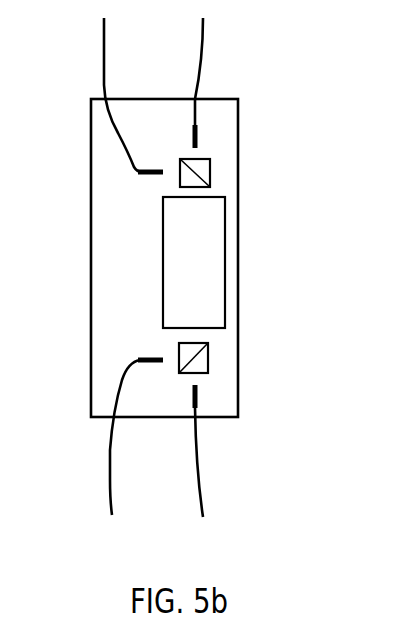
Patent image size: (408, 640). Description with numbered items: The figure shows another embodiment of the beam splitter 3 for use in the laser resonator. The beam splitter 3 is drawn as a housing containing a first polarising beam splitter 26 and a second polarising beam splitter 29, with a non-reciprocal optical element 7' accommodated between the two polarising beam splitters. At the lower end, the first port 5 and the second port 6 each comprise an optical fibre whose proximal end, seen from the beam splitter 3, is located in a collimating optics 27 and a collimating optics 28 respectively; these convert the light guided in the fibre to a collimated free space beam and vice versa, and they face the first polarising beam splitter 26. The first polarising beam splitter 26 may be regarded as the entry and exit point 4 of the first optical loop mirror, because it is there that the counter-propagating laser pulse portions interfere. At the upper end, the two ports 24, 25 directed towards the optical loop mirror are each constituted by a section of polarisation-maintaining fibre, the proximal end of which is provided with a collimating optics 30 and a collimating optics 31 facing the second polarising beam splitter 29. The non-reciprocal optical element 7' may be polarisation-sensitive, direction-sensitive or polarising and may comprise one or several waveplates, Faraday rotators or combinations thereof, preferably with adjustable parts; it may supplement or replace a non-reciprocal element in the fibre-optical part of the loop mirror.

The beam splitter 3 is at (104, 244).
The entry and exit point 4 is at (216, 369).
The first port 5 is at (110, 492).
The second port 6 is at (204, 492).
The non-reciprocal optical element 7' is at (223, 262).
The port 24 is at (104, 45).
The port 25 is at (203, 43).
The first polarising beam splitter 26 is at (210, 355).
The collimating optics 27 is at (156, 359).
The collimating optics 28 is at (198, 398).
The second polarising beam splitter 29 is at (212, 167).
The collimating optics 30 is at (155, 167).
The collimating optics 31 is at (193, 135).